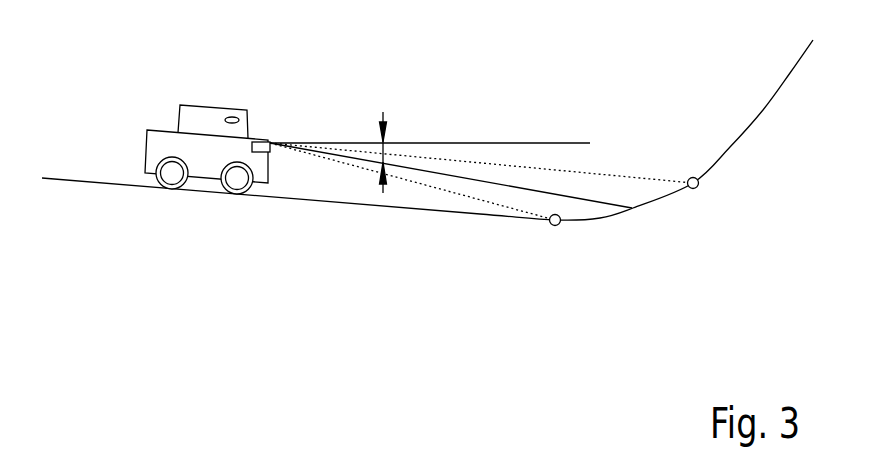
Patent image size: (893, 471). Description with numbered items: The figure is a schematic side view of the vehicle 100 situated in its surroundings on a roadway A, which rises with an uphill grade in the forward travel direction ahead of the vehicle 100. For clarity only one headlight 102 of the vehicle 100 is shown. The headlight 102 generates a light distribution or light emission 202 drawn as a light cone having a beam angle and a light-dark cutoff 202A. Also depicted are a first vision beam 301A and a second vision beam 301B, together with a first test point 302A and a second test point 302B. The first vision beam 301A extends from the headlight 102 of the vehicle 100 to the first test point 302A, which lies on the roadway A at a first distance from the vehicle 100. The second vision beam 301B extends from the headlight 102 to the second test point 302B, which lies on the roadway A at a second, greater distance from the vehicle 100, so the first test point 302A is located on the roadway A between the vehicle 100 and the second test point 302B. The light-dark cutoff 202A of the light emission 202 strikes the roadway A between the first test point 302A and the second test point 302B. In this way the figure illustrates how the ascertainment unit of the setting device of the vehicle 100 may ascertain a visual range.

The vehicle 100 is at (202, 105).
The headlight 102 is at (262, 142).
The light emission 202 is at (578, 158).
The light-dark cutoff 202A is at (587, 200).
The first vision beam 301A is at (413, 181).
The second vision beam 301B is at (643, 183).
The first test point 302A is at (553, 226).
The second test point 302B is at (698, 189).
The roadway A is at (83, 181).